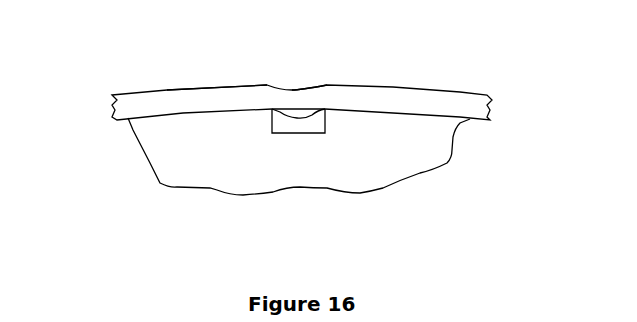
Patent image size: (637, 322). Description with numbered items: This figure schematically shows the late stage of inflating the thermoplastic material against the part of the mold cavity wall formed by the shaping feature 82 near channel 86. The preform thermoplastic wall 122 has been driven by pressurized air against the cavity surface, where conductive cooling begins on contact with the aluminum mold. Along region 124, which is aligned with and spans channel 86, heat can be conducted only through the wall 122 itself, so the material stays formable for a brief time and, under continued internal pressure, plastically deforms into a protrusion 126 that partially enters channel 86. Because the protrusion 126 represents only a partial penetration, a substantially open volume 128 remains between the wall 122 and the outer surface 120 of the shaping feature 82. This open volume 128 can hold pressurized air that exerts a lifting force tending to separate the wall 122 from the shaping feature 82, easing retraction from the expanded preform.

The outer surface 120 is at (107, 92).
The preform thermoplastic wall 122 is at (170, 85).
The region 124 is at (300, 88).
The protrusion 126 is at (285, 102).
The open volume 128 is at (303, 132).
The channel 86 is at (272, 123).
The shaping feature 82 is at (215, 192).